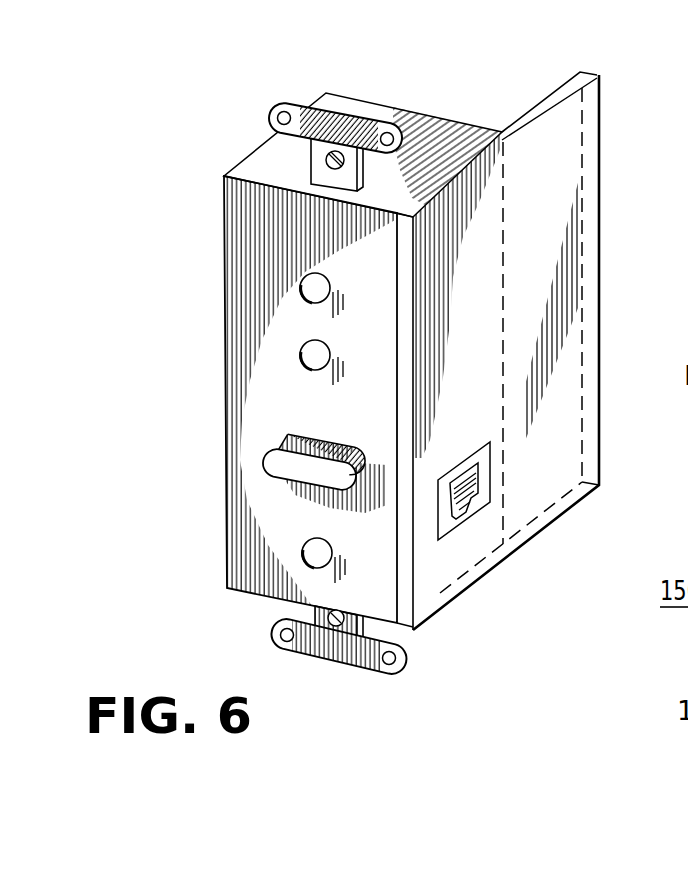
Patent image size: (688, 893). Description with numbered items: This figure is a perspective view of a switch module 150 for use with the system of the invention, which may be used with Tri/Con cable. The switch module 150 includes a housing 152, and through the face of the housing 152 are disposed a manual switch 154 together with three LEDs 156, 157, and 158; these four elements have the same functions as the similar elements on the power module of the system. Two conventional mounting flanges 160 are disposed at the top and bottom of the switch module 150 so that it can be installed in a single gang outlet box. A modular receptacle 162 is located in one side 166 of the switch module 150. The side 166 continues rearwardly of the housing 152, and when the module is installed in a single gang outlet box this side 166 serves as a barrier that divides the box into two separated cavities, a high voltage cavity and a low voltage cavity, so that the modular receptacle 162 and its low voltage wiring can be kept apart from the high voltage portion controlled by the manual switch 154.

The switch module 150 is at (140, 418).
The housing 152 is at (248, 243).
The manual switch 154 is at (300, 472).
The LED 156 is at (300, 287).
The LED 157 is at (303, 355).
The LED 158 is at (303, 554).
The mounting flange 160 is at (318, 109).
The modular receptacle 162 is at (472, 482).
The side 166 is at (563, 182).